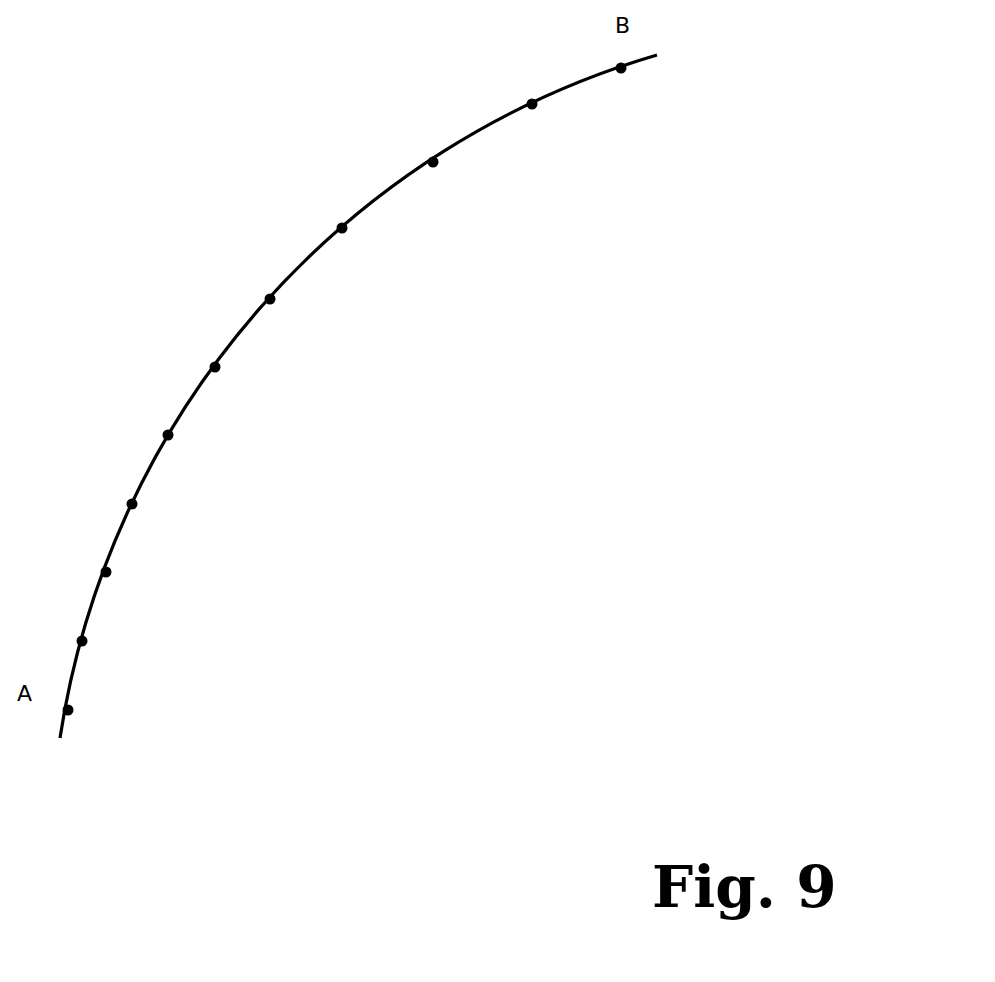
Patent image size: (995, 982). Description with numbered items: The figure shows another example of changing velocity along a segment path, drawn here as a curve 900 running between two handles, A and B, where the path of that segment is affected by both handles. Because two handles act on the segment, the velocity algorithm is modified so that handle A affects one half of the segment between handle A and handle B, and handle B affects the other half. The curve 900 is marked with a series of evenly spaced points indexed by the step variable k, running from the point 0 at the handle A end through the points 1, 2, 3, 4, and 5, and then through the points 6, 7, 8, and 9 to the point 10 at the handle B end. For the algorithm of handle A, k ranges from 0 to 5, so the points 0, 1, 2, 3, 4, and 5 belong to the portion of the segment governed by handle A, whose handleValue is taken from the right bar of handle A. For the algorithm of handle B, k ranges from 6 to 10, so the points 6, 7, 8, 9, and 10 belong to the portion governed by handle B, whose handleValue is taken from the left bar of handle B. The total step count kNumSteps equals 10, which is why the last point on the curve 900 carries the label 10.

The curve 900 is at (217, 325).
The k value 0 is at (82, 712).
The point 1 is at (94, 643).
The point 2 is at (119, 576).
The point 3 is at (144, 508).
The point 4 is at (183, 439).
The k value 5 is at (231, 370).
The k value 6 is at (288, 301).
The point 7 is at (358, 236).
The point 8 is at (451, 171).
The point 9 is at (544, 119).
The kNumSteps 10 is at (637, 85).